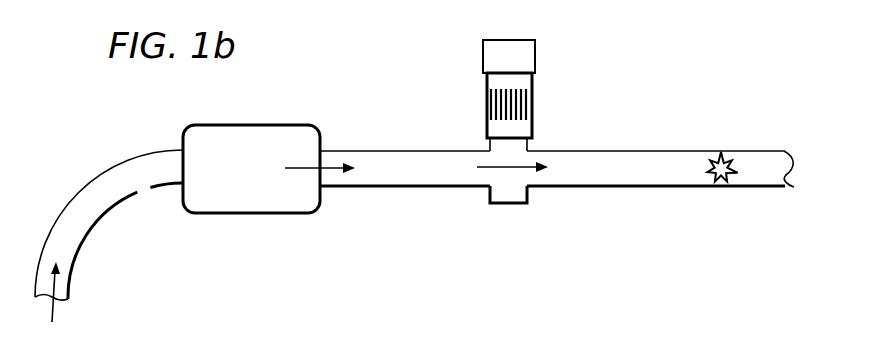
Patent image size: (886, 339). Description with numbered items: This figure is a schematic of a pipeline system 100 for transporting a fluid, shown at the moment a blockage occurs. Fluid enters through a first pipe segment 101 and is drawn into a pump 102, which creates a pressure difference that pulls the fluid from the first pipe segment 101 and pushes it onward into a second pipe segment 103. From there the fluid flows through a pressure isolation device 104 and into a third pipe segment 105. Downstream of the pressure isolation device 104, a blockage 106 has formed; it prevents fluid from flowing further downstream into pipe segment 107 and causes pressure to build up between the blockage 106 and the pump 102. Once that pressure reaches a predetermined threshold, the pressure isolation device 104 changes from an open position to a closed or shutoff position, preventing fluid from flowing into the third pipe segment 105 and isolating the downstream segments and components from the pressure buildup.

The pipeline system 100 is at (688, 57).
The first pipe segment 101 is at (102, 207).
The pump 102 is at (250, 132).
The second pipe segment 103 is at (413, 153).
The pressure isolation device 104 is at (529, 53).
The third pipe segment 105 is at (649, 153).
The blockage 106 is at (722, 153).
The pipe segment 107 is at (778, 178).